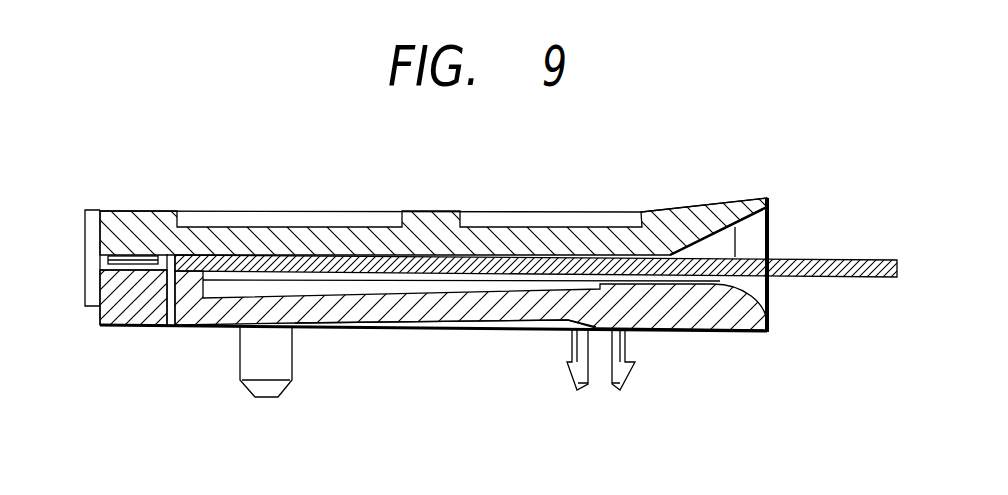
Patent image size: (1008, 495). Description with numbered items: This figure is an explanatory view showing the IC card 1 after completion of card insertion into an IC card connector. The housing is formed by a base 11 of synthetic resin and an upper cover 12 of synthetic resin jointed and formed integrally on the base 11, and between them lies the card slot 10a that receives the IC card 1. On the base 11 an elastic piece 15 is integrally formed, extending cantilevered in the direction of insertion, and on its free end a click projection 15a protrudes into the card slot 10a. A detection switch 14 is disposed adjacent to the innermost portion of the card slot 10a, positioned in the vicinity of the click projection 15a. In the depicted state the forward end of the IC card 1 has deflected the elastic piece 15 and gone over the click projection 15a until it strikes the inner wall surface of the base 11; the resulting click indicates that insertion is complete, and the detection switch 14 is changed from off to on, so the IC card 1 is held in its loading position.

The IC card 1 is at (837, 280).
The card slot 10a is at (722, 248).
The base 11 is at (122, 303).
The upper cover 12 is at (275, 240).
The detection switch 14 is at (140, 256).
The elastic piece 15 is at (438, 310).
The click projection 15a is at (185, 293).